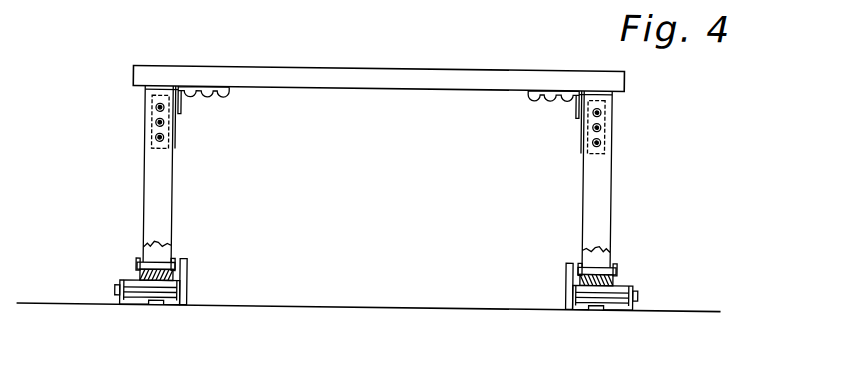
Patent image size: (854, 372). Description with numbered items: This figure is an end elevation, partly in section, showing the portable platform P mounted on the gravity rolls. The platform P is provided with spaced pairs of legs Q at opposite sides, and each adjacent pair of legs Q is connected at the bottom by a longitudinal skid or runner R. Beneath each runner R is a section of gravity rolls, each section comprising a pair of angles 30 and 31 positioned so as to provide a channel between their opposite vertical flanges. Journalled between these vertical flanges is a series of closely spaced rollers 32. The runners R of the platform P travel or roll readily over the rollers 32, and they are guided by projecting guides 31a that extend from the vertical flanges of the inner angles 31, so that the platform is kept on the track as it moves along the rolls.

The portable platform P is at (371, 68).
The legs Q is at (160, 209).
The longitudinal skid or runner R is at (177, 264).
The angle 30 is at (132, 306).
The inner angle 31 is at (180, 306).
The projecting guide 31a is at (188, 271).
The rollers 32 is at (133, 287).